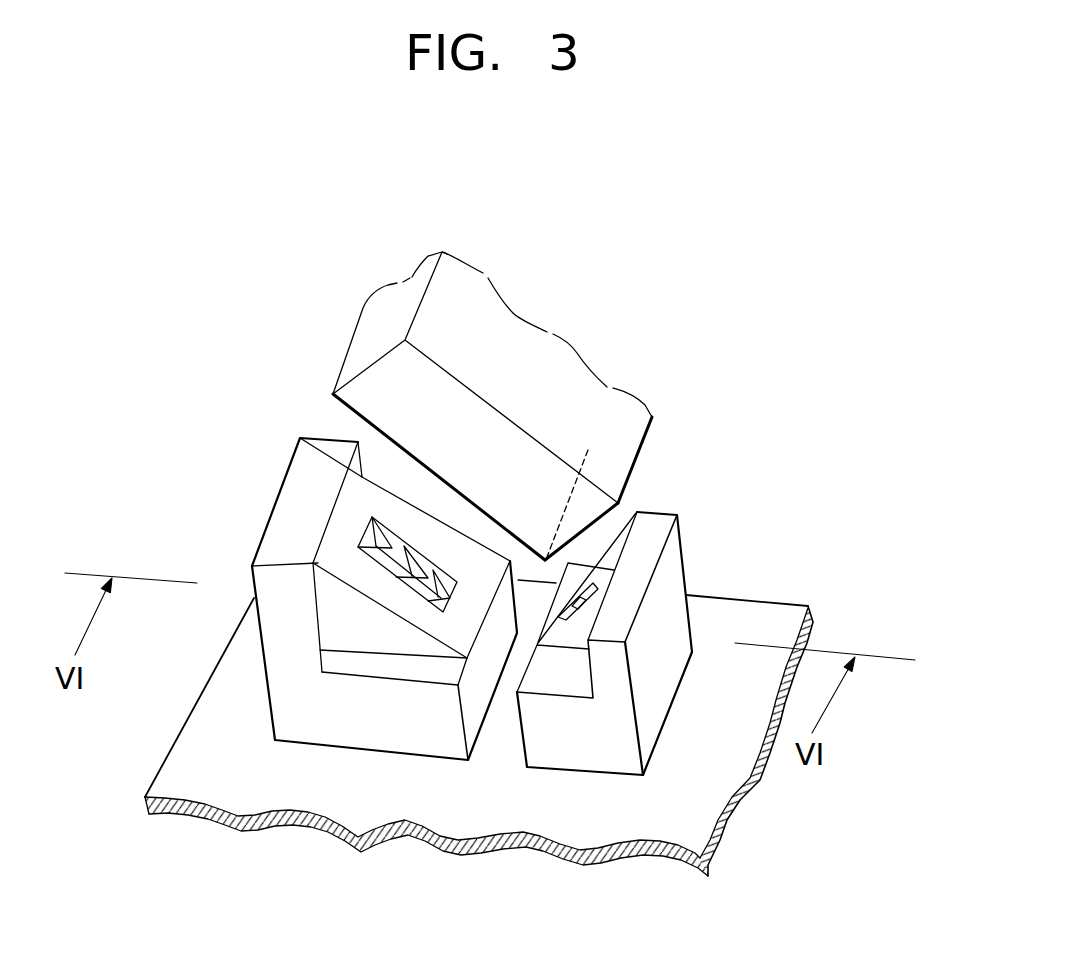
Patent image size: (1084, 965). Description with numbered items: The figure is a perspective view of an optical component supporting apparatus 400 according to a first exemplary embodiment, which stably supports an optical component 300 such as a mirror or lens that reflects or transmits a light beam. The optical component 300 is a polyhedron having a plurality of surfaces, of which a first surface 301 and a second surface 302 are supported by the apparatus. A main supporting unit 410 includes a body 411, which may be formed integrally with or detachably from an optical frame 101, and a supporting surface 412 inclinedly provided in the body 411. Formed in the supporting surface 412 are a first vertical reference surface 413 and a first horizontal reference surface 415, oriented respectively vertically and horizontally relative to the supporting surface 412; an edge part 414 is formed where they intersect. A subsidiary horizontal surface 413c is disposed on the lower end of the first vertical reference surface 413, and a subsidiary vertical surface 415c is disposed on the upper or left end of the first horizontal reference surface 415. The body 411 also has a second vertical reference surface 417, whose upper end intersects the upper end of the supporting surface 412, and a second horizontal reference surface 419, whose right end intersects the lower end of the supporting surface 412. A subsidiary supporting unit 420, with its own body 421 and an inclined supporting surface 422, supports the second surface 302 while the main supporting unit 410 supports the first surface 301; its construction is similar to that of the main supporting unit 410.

The optical frame 101 is at (452, 828).
The optical component 300 is at (485, 406).
The first surface 301 is at (358, 421).
The second surface 302 is at (585, 543).
The optical component supporting apparatus 400 is at (748, 201).
The main supporting unit 410 is at (158, 525).
The body 411 is at (307, 738).
The supporting surface 412 is at (341, 546).
The first vertical reference surface 413 is at (435, 562).
The subsidiary horizontal surface 413c is at (444, 597).
The edge part 414 is at (330, 440).
The first horizontal reference surface 415 is at (406, 562).
The subsidiary vertical surface 415c is at (350, 552).
The second vertical reference surface 417 is at (320, 624).
The second horizontal reference surface 419 is at (412, 673).
The subsidiary supporting unit 420 is at (860, 732).
The body 421 is at (590, 765).
The supporting surface 422 is at (610, 568).